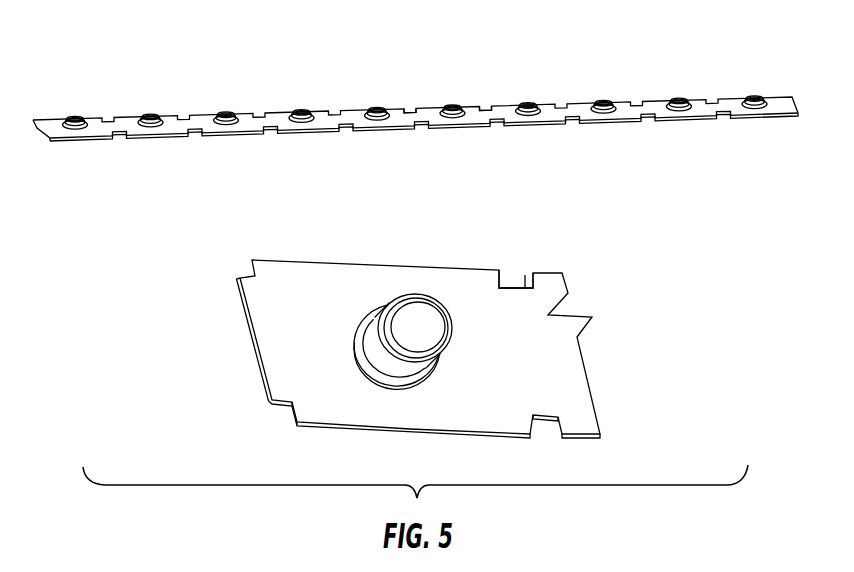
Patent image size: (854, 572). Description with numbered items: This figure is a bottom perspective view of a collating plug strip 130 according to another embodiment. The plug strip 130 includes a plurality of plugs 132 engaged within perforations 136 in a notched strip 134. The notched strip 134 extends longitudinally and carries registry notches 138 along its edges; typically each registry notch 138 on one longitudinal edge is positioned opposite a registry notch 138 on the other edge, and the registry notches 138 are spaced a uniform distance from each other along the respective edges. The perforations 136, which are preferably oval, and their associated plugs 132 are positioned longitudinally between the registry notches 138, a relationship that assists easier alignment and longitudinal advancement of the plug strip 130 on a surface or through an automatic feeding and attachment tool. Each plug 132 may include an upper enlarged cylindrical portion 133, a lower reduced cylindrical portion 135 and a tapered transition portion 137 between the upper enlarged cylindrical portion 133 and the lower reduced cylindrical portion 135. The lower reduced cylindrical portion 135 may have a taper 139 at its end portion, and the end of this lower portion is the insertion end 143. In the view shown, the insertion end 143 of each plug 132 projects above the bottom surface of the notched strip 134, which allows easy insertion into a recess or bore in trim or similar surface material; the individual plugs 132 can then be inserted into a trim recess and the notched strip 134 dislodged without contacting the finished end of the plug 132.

The plug strip 130 is at (415, 236).
The plug 132 is at (415, 253).
The upper enlarged cylindrical portion 133 is at (396, 382).
The notched strip 134 is at (193, 117).
The lower reduced cylindrical portion 135 is at (365, 338).
The perforation 136 is at (366, 325).
The tapered transition portion 137 is at (390, 358).
The registry notch 138 is at (408, 96).
The taper 139 is at (466, 347).
The insertion end 143 is at (532, 96).